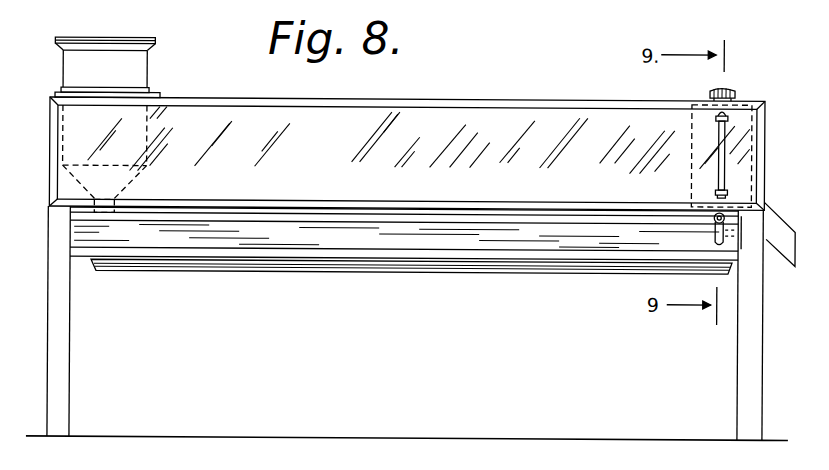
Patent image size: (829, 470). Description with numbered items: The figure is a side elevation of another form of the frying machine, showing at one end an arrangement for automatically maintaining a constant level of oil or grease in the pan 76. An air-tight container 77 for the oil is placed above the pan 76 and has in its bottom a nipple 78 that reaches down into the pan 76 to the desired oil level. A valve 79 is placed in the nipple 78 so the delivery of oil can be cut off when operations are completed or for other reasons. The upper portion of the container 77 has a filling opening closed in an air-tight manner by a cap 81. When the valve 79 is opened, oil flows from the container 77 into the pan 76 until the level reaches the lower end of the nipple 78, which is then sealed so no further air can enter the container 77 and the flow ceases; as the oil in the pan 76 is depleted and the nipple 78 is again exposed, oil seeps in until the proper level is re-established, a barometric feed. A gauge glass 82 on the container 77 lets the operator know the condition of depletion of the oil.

The pan 76 is at (627, 235).
The air-tight container 77 is at (690, 156).
The nipple 78 is at (750, 228).
The valve 79 is at (714, 218).
The cap 81 is at (736, 90).
The gauge glass 82 is at (723, 166).